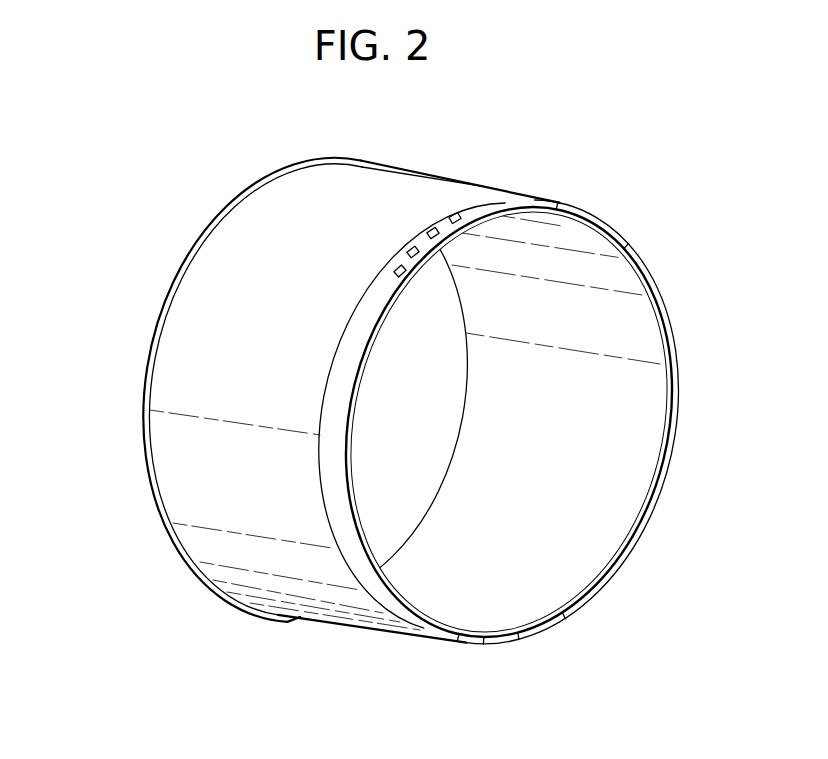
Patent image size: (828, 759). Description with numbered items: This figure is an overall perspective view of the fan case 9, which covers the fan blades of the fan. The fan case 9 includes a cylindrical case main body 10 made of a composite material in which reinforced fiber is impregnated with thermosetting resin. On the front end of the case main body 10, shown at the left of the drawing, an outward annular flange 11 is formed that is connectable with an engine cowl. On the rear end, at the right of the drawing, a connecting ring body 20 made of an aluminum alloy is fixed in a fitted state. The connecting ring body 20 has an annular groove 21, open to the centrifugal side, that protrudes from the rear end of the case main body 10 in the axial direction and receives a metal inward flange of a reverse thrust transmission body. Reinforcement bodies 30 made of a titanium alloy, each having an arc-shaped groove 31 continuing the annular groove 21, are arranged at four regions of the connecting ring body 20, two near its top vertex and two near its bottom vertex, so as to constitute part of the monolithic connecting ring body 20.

The fan case 9 is at (596, 186).
The case main body 10 is at (200, 459).
The outward annular flange 11 is at (148, 378).
The connecting ring body 20 is at (342, 405).
The annular groove 21 is at (378, 344).
The reinforcement bodies 30 is at (447, 230).
The arc-shaped groove 31 is at (400, 266).